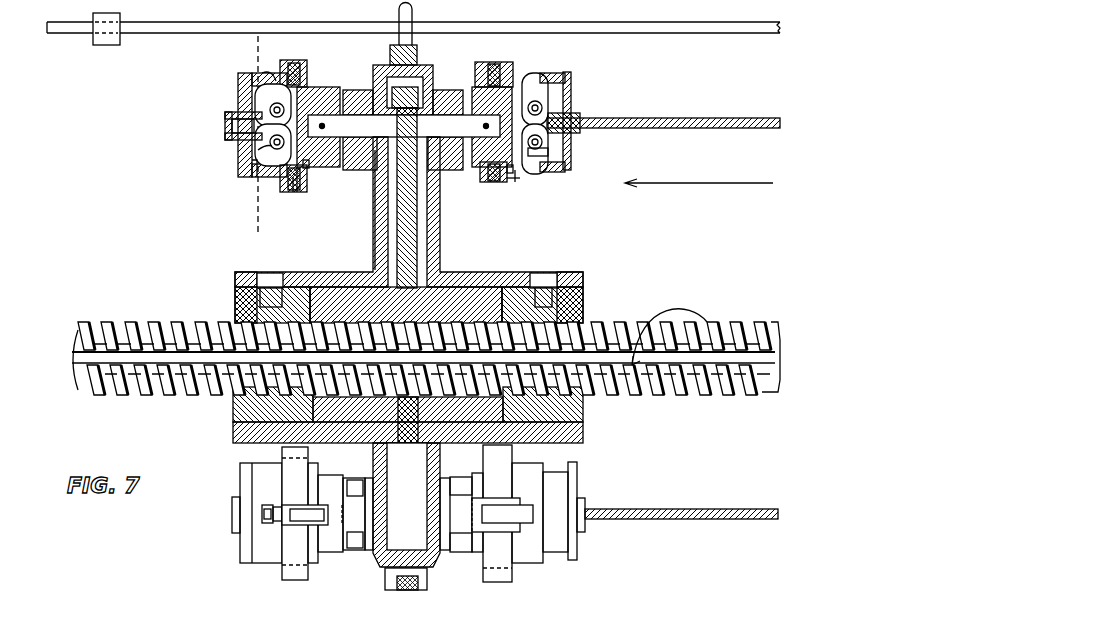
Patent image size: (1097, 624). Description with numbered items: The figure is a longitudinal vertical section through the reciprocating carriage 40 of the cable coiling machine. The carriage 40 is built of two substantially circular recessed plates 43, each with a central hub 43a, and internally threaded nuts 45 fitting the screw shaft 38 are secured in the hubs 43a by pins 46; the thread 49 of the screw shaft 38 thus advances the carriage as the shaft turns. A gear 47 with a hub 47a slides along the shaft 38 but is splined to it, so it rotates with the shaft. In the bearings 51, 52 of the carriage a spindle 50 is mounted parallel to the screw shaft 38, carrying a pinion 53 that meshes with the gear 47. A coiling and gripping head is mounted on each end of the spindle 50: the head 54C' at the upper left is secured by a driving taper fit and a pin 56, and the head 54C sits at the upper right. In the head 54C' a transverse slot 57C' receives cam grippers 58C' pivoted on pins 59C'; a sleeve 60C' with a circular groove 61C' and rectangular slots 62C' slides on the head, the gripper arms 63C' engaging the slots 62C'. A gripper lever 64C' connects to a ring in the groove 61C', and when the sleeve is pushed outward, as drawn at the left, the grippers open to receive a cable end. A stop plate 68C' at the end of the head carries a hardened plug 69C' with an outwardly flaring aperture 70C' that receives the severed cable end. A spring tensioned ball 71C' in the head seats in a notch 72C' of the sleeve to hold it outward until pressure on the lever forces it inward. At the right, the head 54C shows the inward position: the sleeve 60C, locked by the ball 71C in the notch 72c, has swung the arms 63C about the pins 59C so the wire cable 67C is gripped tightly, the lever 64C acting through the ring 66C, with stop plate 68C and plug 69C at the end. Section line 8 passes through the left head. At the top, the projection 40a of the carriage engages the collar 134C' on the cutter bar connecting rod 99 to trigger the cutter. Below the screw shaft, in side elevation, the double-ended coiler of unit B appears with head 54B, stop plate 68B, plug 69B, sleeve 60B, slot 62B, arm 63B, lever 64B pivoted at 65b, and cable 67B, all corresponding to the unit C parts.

The cutter bar connecting rod 99 is at (715, 27).
The lug or collar 134C' is at (88, 48).
The section line 8— 8 is at (245, 245).
The projection 40a is at (414, 12).
The bearing 51 is at (353, 88).
The bearing 52 is at (446, 94).
The coiling and gripping head 54C' is at (312, 63).
The coiling and gripping head 54C is at (521, 65).
The spindle 50 is at (407, 160).
The pin 56 is at (325, 126).
The gear 47 is at (403, 225).
The recessed plate 43 is at (375, 225).
The pinion 53 is at (375, 212).
The pin 46 is at (267, 282).
The internally threaded nut 45 is at (235, 298).
The hub 47a is at (348, 302).
The central hub 43a is at (295, 272).
The screw thread 49 is at (173, 360).
The reciprocating carriage 40 is at (377, 567).
The screw shaft 38 is at (700, 377).
The stop plate 68C' is at (210, 121).
The transverse slot 57C' is at (237, 105).
The rectangular slot 62C' is at (239, 111).
The arm 63C' is at (279, 59).
The pin 59C' is at (228, 158).
The outwardly flaring aperture 70C' is at (207, 126).
The hardened plug 69C' is at (214, 141).
The cam gripper 58C' is at (224, 164).
The sleeve 60C' is at (234, 189).
The circular groove 61C' is at (293, 197).
The notch 72C' is at (314, 183).
The spring tensioned ball 71C' is at (330, 170).
The gripper lever 64C' is at (314, 208).
The arm 63C is at (557, 134).
The sleeve 60C is at (588, 110).
The stop plate 68C is at (600, 120).
The wire cable 67C is at (628, 118).
The hardened plug 69C is at (597, 134).
The pin 59C is at (573, 158).
The notch 72c is at (475, 170).
The spring tensioned ball 71C is at (513, 195).
The gripper lever 64C is at (541, 198).
The ring 66C is at (513, 178).
The stop plate 68B is at (240, 478).
The hardened plug 69B is at (235, 513).
The gripper lever 64B is at (298, 573).
The rectangular slot 62B is at (262, 527).
The arm 63B is at (268, 524).
The sleeve 60B is at (270, 553).
The pivot 65b is at (310, 557).
The coiling and gripping head 54B is at (552, 487).
The wire cable 67B is at (648, 510).